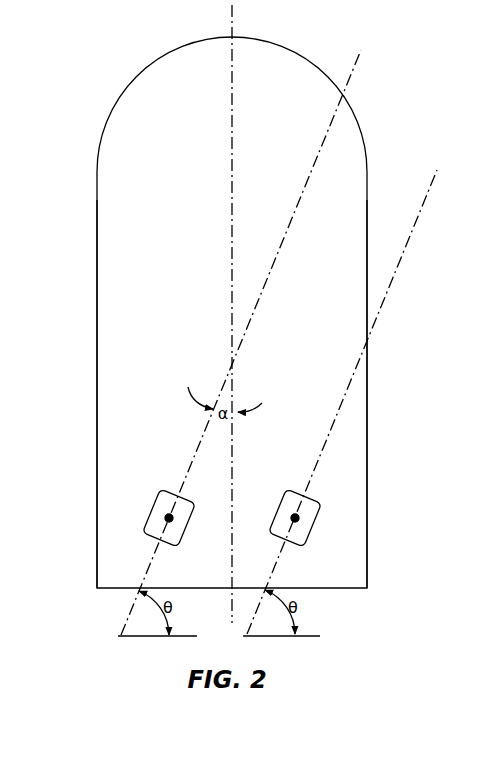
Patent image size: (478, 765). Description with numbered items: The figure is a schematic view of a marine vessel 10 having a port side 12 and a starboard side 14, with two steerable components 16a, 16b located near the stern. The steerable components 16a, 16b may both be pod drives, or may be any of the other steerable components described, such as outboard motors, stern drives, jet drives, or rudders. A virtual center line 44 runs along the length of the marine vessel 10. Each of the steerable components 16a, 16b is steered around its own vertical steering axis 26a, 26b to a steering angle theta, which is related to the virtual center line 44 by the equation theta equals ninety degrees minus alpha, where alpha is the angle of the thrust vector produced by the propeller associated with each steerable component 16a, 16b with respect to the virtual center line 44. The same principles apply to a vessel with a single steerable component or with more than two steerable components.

The marine vessel 10 is at (367, 168).
The port side 12 is at (92, 322).
The starboard side 14 is at (372, 371).
The virtual center line 44 is at (230, 154).
The steerable component 16a is at (146, 524).
The steerable component 16b is at (316, 521).
The vertical steering axis 26a is at (166, 516).
The vertical steering axis 26b is at (292, 515).